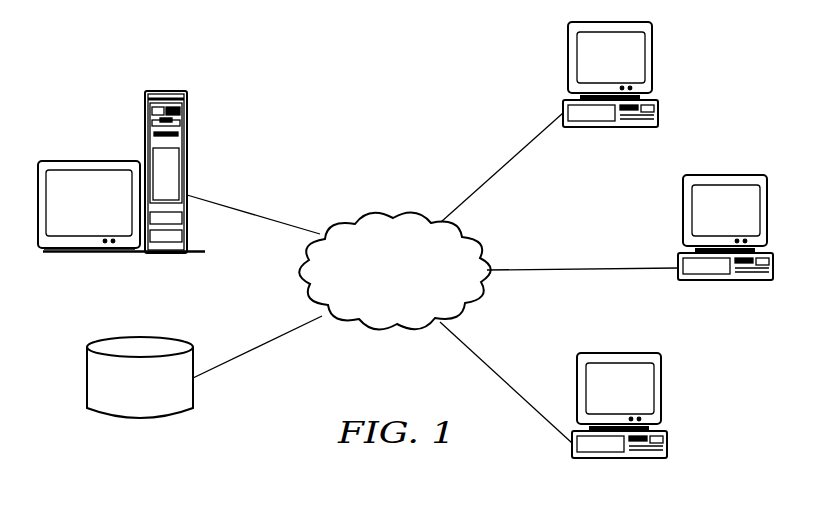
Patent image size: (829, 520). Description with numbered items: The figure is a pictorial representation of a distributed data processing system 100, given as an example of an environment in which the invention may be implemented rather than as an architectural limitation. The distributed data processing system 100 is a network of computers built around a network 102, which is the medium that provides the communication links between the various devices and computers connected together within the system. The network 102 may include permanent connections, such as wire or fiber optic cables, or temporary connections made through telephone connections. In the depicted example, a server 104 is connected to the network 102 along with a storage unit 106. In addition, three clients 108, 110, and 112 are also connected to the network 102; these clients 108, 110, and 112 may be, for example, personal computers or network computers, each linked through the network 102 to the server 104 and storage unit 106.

The distributed data processing system 100 is at (298, 101).
The network 102 is at (416, 287).
The server 104 is at (145, 118).
The storage unit 106 is at (87, 380).
The client 108 is at (653, 67).
The client 110 is at (767, 215).
The client 112 is at (660, 395).